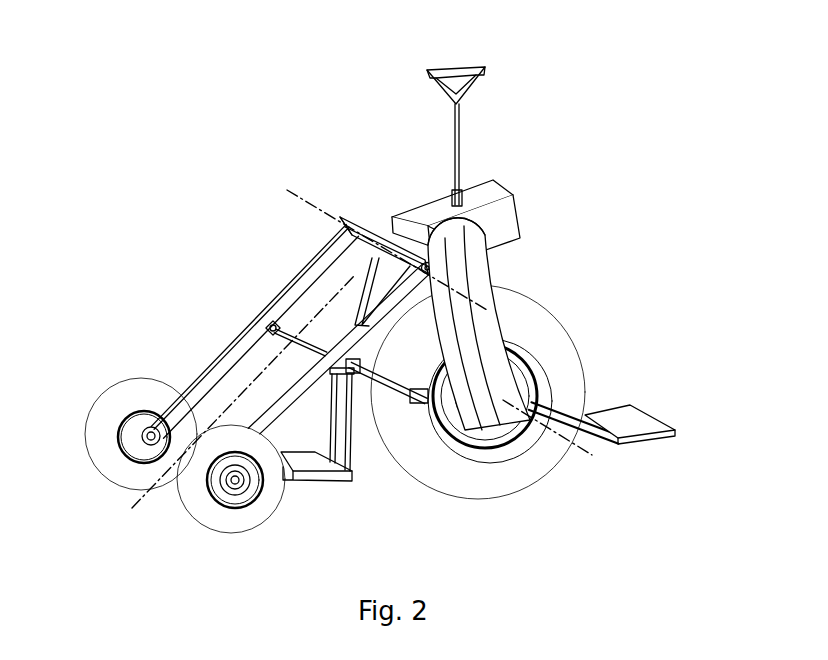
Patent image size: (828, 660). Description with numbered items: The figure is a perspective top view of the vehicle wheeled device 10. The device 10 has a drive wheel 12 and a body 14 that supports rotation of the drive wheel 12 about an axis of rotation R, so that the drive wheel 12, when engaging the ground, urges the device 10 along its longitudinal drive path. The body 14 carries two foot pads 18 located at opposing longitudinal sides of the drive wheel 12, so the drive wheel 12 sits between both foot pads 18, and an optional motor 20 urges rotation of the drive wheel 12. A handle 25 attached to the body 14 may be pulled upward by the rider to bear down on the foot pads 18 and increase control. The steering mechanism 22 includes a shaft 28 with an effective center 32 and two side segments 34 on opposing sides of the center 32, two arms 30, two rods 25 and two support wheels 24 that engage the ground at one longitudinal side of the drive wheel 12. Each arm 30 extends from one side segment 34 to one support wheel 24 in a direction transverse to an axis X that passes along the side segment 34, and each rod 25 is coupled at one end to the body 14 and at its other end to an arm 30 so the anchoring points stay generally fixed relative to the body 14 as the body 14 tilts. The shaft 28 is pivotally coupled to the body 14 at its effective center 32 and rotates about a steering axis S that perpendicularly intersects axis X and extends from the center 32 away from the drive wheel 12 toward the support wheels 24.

The vehicle wheeled device 10 is at (385, 313).
The drive wheel 12 is at (498, 409).
The body 14 is at (446, 273).
The foot pads 18 is at (328, 475).
The motor 20 is at (513, 368).
The steering mechanism 22 is at (275, 282).
The support wheels 24 is at (118, 402).
The handle / rods 25 is at (457, 68).
The shaft 28 is at (375, 216).
The arms 30 is at (300, 274).
The effective center 32 is at (378, 240).
The side segments 34 is at (353, 222).
The steering axis S is at (293, 390).
The axis X is at (298, 192).
The axis of rotation R is at (578, 447).